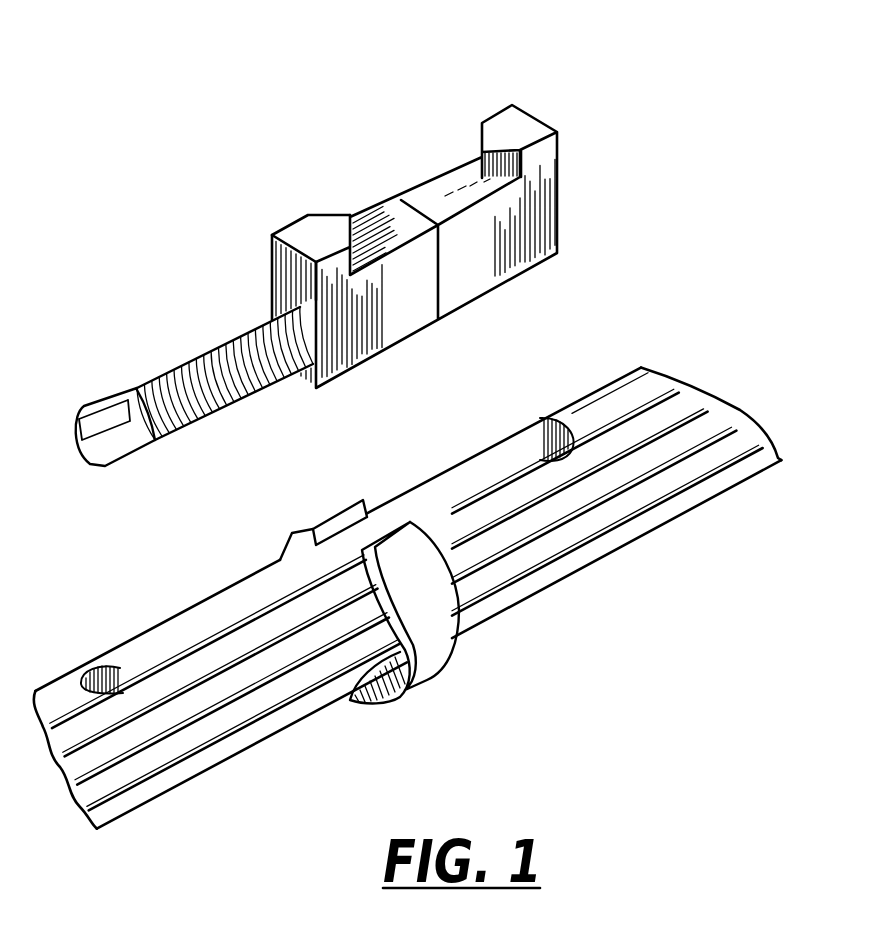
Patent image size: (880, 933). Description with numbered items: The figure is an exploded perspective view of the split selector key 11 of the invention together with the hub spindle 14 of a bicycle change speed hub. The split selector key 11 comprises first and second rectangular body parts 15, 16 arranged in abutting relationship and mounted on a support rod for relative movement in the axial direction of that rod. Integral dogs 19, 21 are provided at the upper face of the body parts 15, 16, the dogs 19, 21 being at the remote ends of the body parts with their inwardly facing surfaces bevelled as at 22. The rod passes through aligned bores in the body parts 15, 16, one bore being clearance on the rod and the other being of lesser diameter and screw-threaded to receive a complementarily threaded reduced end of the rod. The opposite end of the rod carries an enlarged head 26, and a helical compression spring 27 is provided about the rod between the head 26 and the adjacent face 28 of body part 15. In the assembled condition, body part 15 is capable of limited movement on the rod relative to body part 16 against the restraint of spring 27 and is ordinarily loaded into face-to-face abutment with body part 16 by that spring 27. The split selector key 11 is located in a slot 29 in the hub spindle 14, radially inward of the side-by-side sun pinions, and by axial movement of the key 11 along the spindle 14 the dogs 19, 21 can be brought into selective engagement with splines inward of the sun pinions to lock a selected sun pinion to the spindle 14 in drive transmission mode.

The split selector key 11 is at (438, 92).
The spindle 14 is at (667, 420).
The first rectangular body part 15 is at (372, 321).
The second rectangular body part 16 is at (502, 220).
The dog 19 is at (333, 263).
The dog 21 is at (537, 156).
The bevel 22 is at (326, 213).
The enlarged head 26 is at (116, 410).
The helical compression spring 27 is at (186, 418).
The adjacent face 28 is at (282, 288).
The slot 29 is at (207, 622).